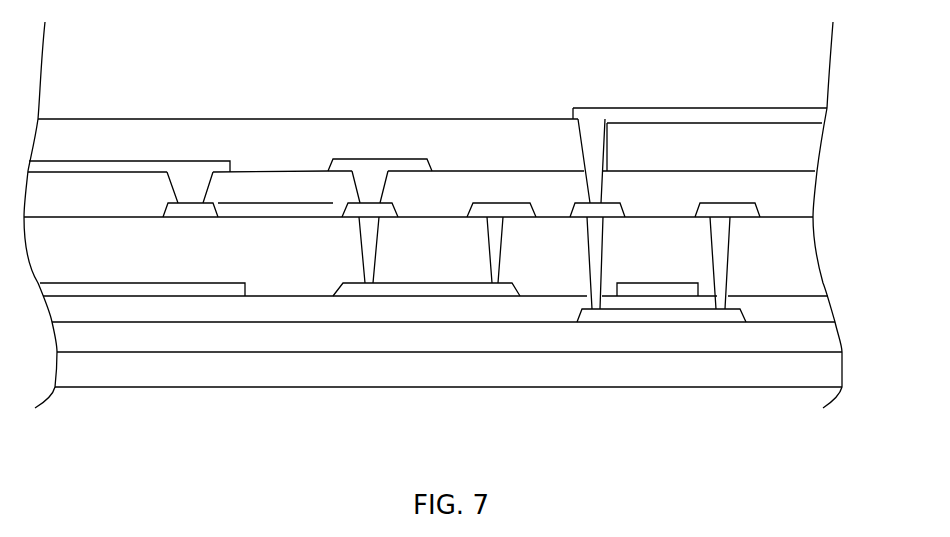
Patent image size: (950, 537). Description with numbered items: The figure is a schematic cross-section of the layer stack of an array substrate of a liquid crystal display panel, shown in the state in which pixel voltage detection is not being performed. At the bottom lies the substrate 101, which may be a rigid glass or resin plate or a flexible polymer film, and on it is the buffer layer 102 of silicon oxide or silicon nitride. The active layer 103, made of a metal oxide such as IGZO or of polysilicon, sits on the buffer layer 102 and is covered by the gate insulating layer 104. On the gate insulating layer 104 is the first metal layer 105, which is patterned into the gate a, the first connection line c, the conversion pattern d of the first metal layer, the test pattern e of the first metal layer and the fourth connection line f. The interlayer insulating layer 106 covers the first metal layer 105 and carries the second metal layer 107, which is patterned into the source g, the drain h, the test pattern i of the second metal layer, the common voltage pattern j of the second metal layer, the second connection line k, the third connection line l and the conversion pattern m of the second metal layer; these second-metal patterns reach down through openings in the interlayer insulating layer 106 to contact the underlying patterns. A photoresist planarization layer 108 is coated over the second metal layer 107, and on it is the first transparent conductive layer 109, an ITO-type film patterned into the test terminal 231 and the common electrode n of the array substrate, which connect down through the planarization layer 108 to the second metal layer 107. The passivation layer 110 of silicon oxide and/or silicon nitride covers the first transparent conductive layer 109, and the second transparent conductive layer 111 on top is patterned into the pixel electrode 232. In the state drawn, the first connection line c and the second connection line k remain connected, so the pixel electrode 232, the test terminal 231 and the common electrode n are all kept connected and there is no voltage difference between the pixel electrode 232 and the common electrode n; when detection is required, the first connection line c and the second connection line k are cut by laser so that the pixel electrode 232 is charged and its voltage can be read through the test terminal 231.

The substrate 101 is at (832, 375).
The buffer layer 102 is at (832, 343).
The active layer 103 is at (732, 312).
The gate insulating layer 104 is at (827, 313).
The first metal layer 105 is at (707, 288).
The interlayer insulating layer 106 is at (788, 242).
The second metal layer 107 is at (747, 213).
The planarization layer 108 is at (788, 187).
The first transparent conductive layer 109 is at (47, 162).
The passivation layer 110 is at (782, 143).
The second transparent conductive layer 111 is at (807, 112).
The test terminal 231 is at (379, 165).
The pixel electrode 232 is at (748, 117).
The gate a is at (637, 290).
The first connection line c is at (79, 290).
The conversion pattern of the first metal layer d is at (498, 288).
The test pattern of the first metal layer e is at (357, 288).
The fourth connection line f is at (447, 288).
The source g is at (727, 212).
The drain h is at (597, 212).
The test pattern of the second metal layer i is at (366, 212).
The common voltage pattern of the second metal layer j is at (195, 212).
The second connection line k is at (287, 212).
The third connection line l is at (550, 212).
The conversion pattern of the second metal layer m is at (493, 212).
The common electrode of the array substrate n is at (92, 167).